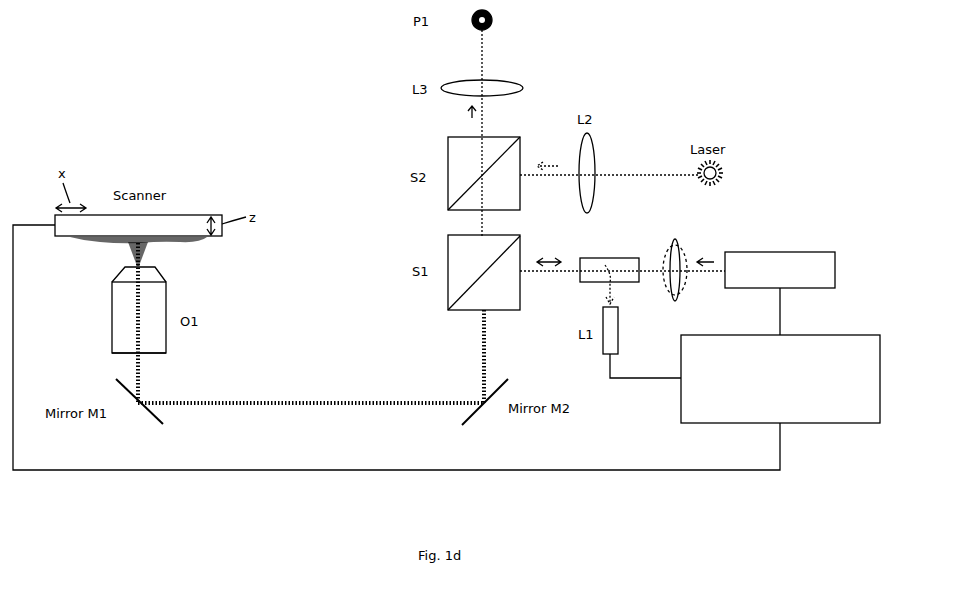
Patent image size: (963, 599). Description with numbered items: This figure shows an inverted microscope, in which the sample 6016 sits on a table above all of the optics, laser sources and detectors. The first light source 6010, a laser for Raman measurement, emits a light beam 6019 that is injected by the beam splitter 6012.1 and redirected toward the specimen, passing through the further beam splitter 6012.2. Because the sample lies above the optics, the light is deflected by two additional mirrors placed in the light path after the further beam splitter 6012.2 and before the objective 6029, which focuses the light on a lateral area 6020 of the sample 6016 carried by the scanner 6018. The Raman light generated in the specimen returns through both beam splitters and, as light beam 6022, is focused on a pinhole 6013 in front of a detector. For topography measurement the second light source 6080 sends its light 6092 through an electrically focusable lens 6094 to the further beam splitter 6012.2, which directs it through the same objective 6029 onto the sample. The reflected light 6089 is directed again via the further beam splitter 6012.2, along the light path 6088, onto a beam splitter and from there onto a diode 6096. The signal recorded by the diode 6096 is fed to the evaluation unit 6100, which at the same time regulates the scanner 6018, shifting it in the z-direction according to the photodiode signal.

The pinhole 6013 is at (495, 18).
The light beam 6022 is at (485, 62).
The beam splitter 6012.1 is at (447, 149).
The light beam 6019 is at (641, 173).
The first light source 6010 is at (730, 168).
The further beam splitter 6012.2 is at (447, 244).
The reflected beam 6088 is at (543, 276).
The diode 6096 is at (611, 331).
The electrically focusable lens 6094 is at (676, 240).
The light path of second light source 6092 is at (704, 277).
The second light source 6080 is at (837, 259).
The evaluation unit 6100 is at (882, 339).
The scanner 6018 is at (197, 216).
The lateral area 6020 is at (130, 250).
The sample 6016 is at (208, 242).
The reflected light 6089 is at (133, 315).
The objective 6029 is at (118, 348).